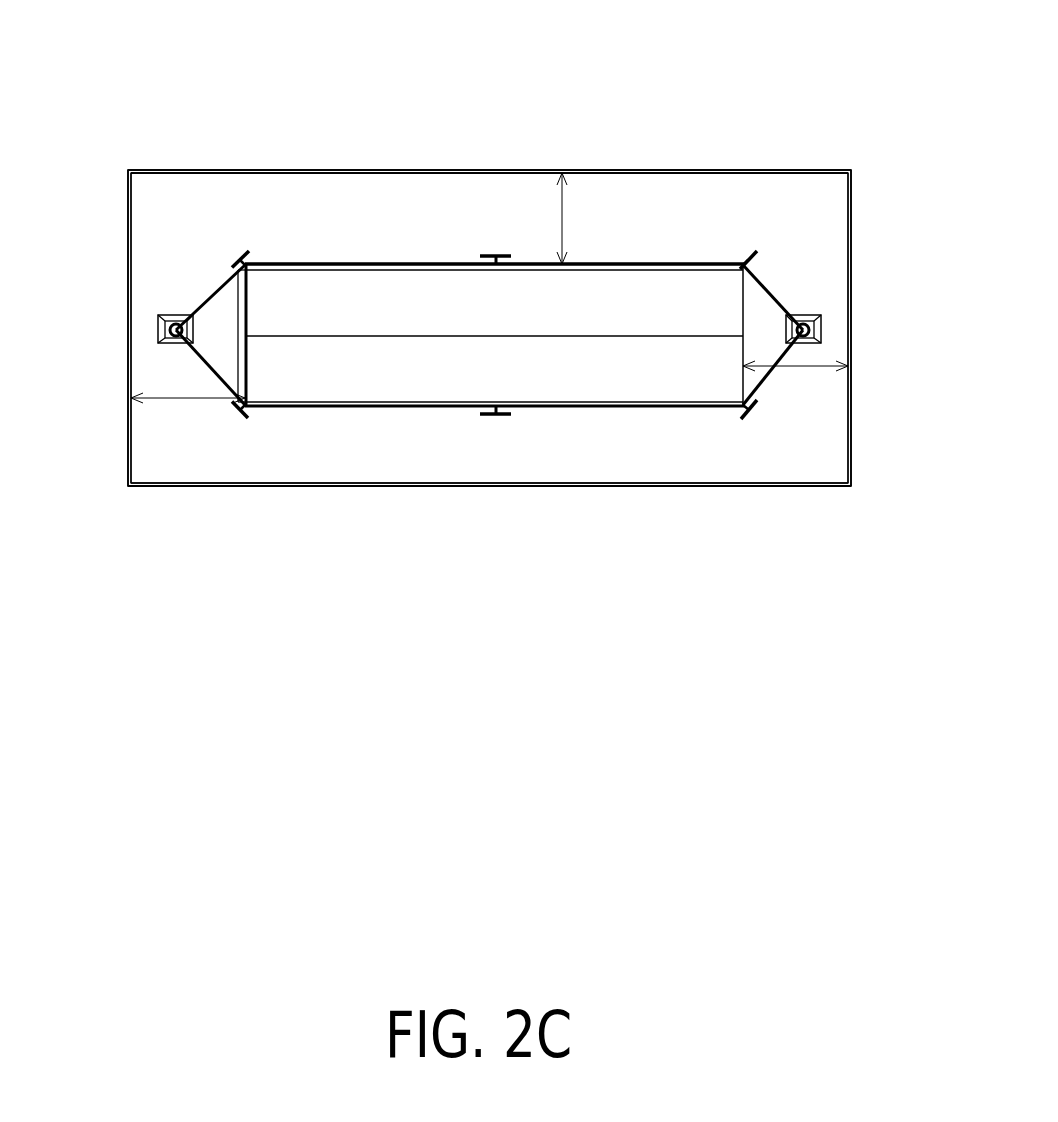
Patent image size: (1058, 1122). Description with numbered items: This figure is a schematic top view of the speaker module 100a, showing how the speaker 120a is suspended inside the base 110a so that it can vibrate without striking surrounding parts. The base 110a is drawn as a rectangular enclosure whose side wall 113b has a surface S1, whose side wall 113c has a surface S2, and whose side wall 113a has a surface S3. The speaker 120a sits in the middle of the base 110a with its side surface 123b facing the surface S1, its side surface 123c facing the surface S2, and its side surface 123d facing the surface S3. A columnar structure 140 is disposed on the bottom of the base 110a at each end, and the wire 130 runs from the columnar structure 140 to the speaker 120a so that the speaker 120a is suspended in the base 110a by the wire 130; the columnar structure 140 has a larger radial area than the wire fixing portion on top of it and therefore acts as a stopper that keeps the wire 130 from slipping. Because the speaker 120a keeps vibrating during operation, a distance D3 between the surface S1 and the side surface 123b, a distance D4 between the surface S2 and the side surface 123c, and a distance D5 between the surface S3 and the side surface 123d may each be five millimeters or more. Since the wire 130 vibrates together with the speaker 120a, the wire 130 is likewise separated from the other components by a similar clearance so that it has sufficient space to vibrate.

The speaker module 100a is at (175, 49).
The base 110a is at (790, 170).
The side wall 113a is at (127, 450).
The side wall 113b is at (470, 170).
The side wall 113c is at (913, 445).
The speaker 120a is at (287, 307).
The side surface 123b is at (664, 262).
The side surface 123c is at (746, 284).
The side surface 123d is at (238, 271).
The wire 130 is at (205, 298).
The columnar structure 140 is at (158, 333).
The surface S1 is at (356, 177).
The surface S2 is at (848, 484).
The surface S3 is at (132, 484).
The distance D3 is at (563, 225).
The distance D4 is at (806, 368).
The distance D5 is at (132, 395).